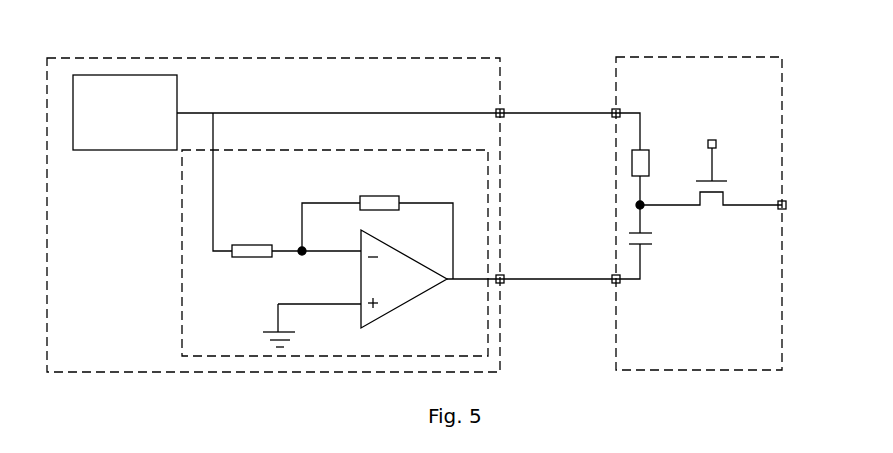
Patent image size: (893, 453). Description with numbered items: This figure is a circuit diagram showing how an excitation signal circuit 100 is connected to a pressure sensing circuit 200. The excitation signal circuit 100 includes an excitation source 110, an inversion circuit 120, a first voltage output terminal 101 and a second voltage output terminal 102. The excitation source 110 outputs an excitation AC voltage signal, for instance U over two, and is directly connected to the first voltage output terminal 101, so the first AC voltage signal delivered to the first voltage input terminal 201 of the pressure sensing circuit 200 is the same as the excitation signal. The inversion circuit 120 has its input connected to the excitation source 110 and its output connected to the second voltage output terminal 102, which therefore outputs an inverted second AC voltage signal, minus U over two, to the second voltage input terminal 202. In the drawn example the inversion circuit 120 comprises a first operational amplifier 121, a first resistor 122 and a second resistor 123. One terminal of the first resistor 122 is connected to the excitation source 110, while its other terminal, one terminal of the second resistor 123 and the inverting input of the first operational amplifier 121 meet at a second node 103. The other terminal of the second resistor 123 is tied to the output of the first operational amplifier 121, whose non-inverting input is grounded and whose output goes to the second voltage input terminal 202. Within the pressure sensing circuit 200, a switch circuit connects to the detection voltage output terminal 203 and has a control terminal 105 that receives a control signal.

The excitation signal circuit 100 is at (300, 57).
The excitation source 110 is at (125, 112).
The inversion circuit 120 is at (178, 232).
The first operational amplifier 121 is at (415, 305).
The first resistor 122 is at (255, 263).
The second resistor 123 is at (390, 189).
The second node 103 is at (297, 248).
The first voltage output terminal 101 is at (507, 107).
The second voltage output terminal 102 is at (505, 285).
The pressure sensing circuit 200 is at (693, 56).
The first voltage input terminal 201 is at (612, 120).
The second voltage input terminal 202 is at (610, 273).
The detection voltage output terminal 203 is at (792, 199).
The control terminal 105 is at (715, 139).